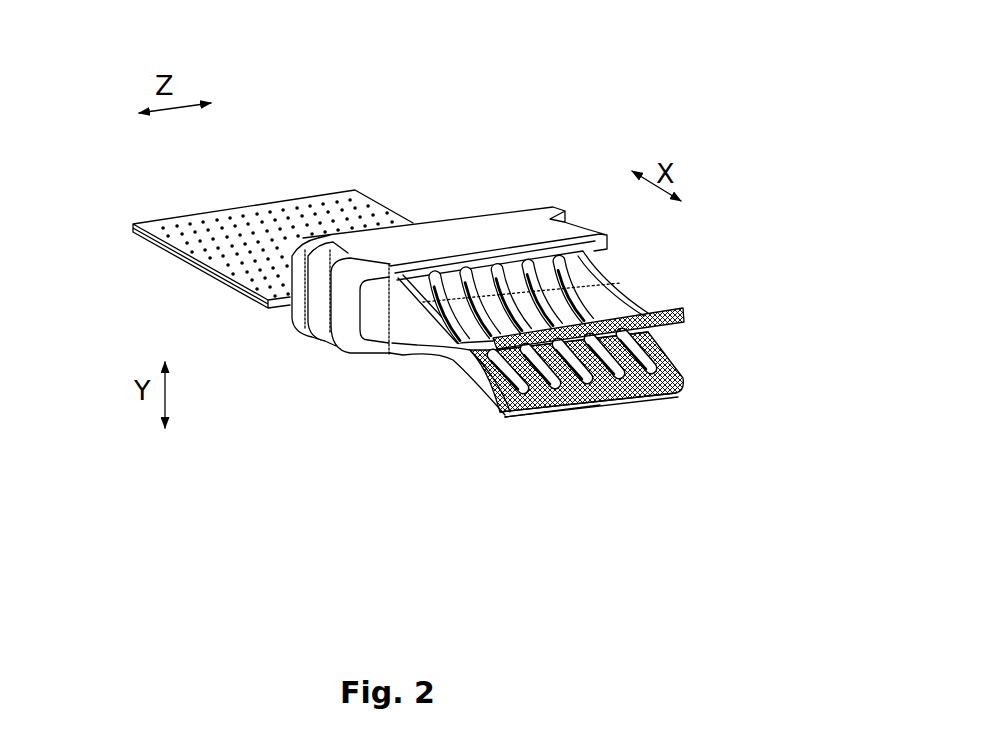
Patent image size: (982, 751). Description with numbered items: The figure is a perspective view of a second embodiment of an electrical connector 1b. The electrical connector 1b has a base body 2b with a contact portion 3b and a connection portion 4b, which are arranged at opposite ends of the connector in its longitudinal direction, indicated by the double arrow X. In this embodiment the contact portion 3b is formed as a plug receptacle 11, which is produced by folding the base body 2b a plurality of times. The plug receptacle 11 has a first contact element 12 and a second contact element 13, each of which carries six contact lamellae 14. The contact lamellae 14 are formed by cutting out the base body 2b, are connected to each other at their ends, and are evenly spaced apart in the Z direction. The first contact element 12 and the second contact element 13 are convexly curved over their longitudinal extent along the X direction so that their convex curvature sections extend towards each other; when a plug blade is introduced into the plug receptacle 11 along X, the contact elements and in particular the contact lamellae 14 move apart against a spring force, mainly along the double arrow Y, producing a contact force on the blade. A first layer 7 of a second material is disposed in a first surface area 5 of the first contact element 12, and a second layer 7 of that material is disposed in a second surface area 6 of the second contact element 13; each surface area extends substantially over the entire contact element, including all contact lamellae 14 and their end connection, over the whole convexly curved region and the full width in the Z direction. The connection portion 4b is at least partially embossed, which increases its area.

The electrical connector 1b is at (596, 125).
The base body 2b is at (373, 353).
The contact portion 3b is at (622, 284).
The connection portion 4b is at (157, 255).
The first surface area 5 is at (647, 340).
The second surface area 6 is at (505, 403).
The layer of the second material 7 is at (588, 402).
The plug receptacle 11 is at (611, 286).
The first contact element 12 is at (683, 310).
The second contact element 13 is at (673, 397).
The contact lamellae 14 is at (507, 308).